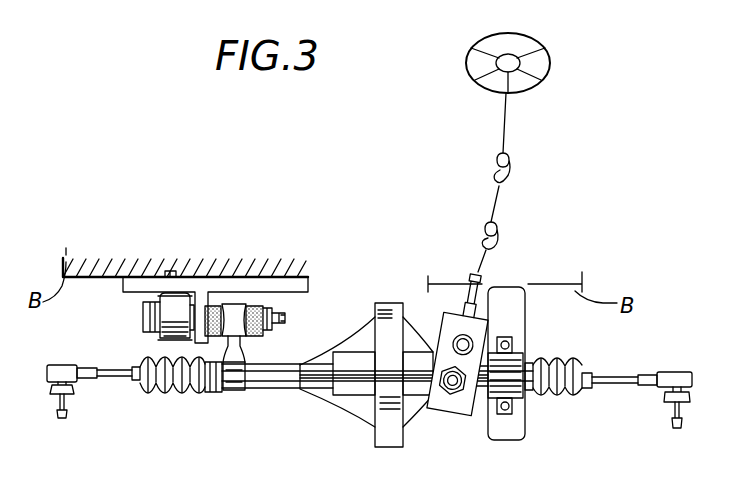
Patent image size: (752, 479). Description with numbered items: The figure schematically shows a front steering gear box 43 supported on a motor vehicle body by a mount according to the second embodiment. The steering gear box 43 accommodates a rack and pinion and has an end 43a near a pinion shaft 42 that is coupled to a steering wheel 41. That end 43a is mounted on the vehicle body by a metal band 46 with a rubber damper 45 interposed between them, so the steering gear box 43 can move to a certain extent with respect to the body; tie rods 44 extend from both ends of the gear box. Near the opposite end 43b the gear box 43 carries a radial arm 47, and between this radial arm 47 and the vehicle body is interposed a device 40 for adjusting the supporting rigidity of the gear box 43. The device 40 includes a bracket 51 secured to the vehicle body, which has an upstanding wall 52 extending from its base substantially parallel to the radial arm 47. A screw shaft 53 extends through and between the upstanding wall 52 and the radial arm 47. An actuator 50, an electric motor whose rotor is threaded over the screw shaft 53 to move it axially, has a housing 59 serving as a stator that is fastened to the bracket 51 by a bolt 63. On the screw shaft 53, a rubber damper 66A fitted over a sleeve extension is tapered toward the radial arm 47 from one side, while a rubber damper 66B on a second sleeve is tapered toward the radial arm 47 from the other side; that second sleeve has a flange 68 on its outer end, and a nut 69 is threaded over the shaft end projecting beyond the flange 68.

The device for adjusting supporting rigidity 40 is at (137, 271).
The steering wheel 41 is at (550, 65).
The pinion shaft 42 is at (478, 302).
The steering gear box 43 is at (318, 386).
The end of steering gear box 43a is at (537, 358).
The opposite end of steering gear box 43b is at (221, 392).
The tie rod 44 is at (110, 378).
The rubber damper 45 is at (493, 403).
The metal band 46 is at (513, 352).
The radial arm 47 is at (237, 303).
The actuator 50 is at (155, 339).
The bracket 51 is at (157, 284).
The upstanding wall 52 is at (195, 394).
The screw shaft 53 is at (287, 316).
The housing 59 is at (148, 317).
The bolt 63 is at (170, 270).
The rubber damper 66A is at (214, 303).
The rubber damper 66B is at (258, 304).
The flange 68 is at (250, 387).
The nut 69 is at (274, 312).